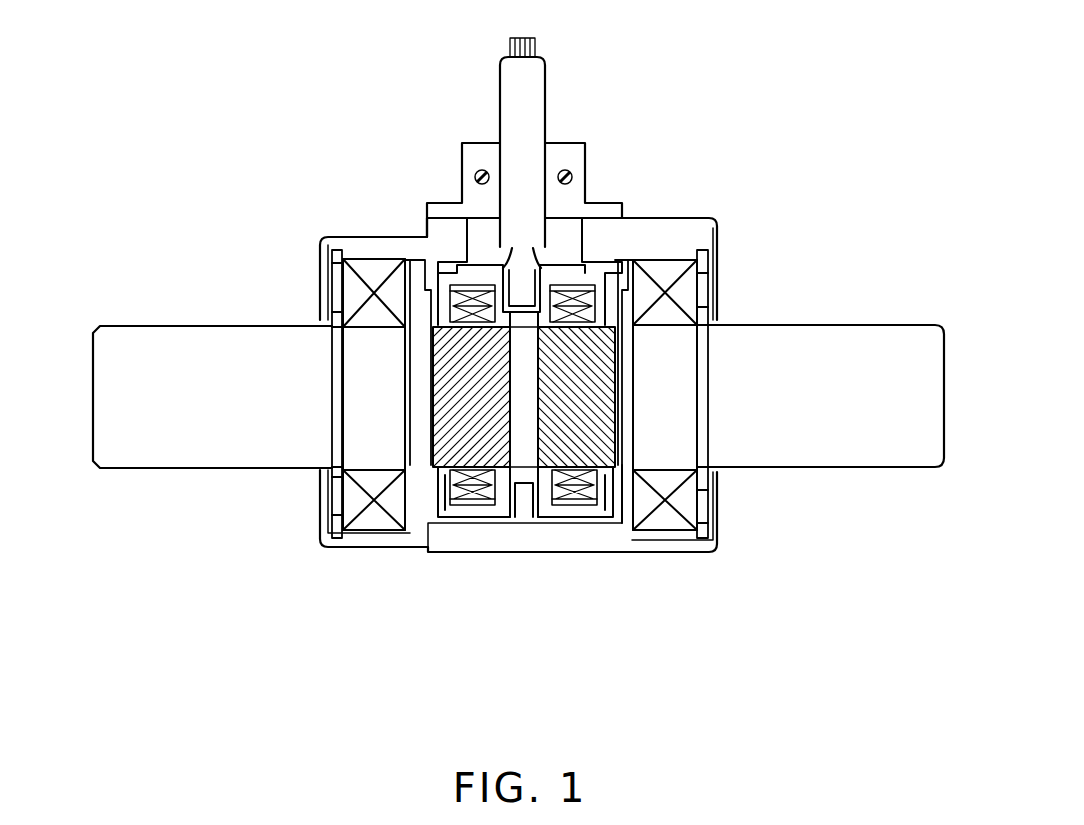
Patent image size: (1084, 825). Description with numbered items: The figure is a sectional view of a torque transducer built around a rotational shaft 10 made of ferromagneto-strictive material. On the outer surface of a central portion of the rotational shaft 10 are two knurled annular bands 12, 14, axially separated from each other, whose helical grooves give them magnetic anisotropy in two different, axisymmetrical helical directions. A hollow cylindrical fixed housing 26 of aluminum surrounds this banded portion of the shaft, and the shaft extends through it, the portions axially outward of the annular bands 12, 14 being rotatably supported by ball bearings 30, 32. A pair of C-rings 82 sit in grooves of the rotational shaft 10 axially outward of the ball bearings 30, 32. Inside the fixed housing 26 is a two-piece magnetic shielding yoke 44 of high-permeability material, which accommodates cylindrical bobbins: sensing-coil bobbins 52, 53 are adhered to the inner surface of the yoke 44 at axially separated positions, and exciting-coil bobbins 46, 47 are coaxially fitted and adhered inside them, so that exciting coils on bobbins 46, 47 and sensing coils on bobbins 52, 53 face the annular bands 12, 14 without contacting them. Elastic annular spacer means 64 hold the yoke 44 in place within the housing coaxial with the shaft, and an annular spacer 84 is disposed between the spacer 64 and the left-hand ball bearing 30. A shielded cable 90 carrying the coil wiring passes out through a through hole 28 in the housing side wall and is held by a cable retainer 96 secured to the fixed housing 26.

The rotational shaft 10 is at (807, 337).
The annular band 12 is at (481, 446).
The annular band 14 is at (573, 446).
The fixed housing 26 is at (673, 233).
The through hole 28 is at (563, 232).
The ball bearing 30 is at (371, 272).
The ball bearing 32 is at (670, 271).
The magnetic shielding yoke 44 is at (608, 282).
The exciting-coil bobbin 46 is at (443, 514).
The exciting-coil bobbin 47 is at (549, 452).
The sensing-coil bobbin 52 is at (455, 284).
The sensing-coil bobbin 53 is at (587, 283).
The annular spacer means 64 is at (446, 521).
The C-ring 82 is at (321, 474).
The annular spacer 84 is at (430, 505).
The shielded cable 90 is at (537, 97).
The cable retainer 96 is at (473, 153).